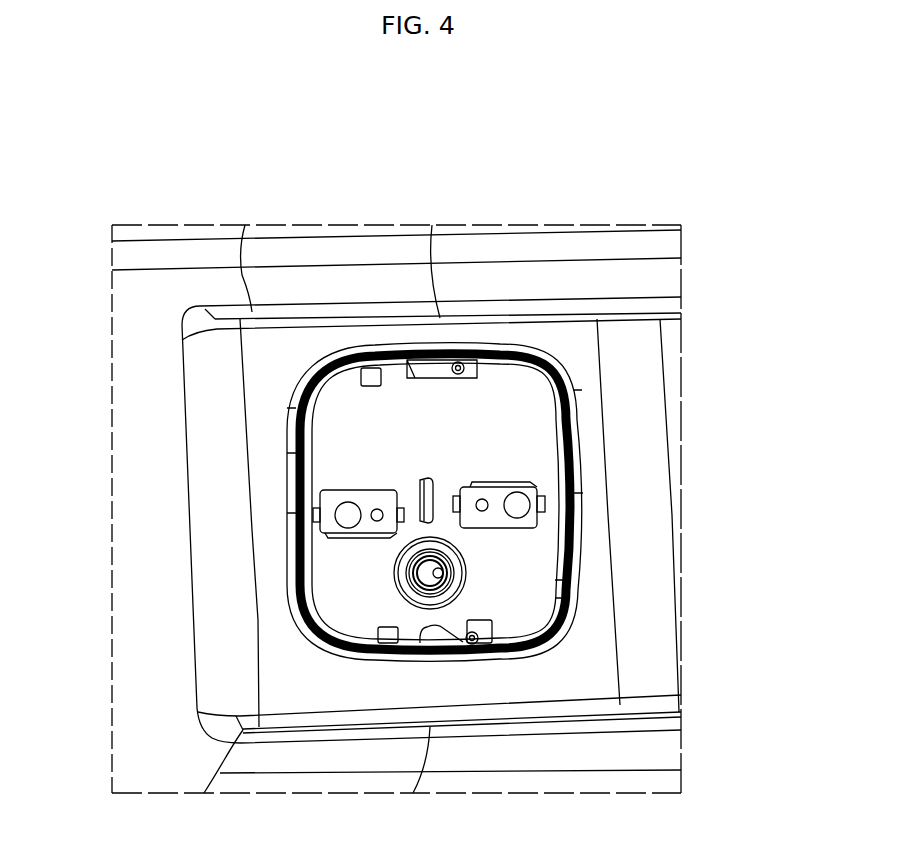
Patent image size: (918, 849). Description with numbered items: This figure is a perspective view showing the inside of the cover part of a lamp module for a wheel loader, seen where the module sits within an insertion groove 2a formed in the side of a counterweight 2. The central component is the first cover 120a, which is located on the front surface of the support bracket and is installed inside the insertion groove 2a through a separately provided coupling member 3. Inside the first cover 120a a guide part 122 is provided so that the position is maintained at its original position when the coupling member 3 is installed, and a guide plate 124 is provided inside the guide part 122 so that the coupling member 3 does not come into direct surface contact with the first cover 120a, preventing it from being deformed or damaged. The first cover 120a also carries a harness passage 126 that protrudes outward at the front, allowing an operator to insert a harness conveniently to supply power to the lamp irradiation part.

The counterweight 2 is at (554, 249).
The insertion groove 2a is at (629, 640).
The coupling member 3 is at (527, 504).
The first cover 120a is at (286, 458).
The guide part 122 is at (353, 489).
The guide plate 124 is at (380, 488).
The harness passage 126 is at (450, 568).